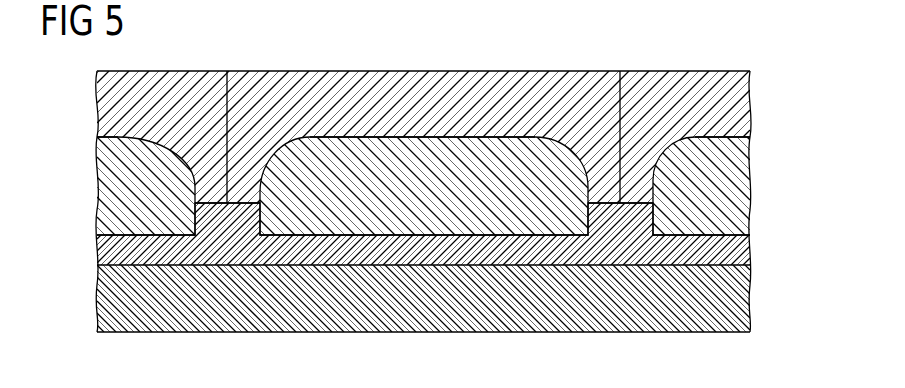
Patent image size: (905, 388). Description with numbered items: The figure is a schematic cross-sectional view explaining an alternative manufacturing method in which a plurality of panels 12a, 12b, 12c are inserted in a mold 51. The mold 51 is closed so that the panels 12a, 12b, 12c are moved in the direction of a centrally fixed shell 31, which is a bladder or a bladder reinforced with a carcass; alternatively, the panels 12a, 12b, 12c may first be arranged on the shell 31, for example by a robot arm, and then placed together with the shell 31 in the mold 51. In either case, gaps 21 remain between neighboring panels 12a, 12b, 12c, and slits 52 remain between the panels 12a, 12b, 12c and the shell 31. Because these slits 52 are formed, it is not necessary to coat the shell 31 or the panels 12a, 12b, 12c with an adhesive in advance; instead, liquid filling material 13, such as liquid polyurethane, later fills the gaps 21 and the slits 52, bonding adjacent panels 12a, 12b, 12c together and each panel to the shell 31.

The panel 12a is at (115, 188).
The panel 12b is at (342, 148).
The panel 12c is at (730, 183).
The filling material 13 is at (740, 250).
The gap 21 is at (215, 190).
The shell 31 is at (115, 293).
The mold 51 is at (438, 85).
The slit 52 is at (525, 250).